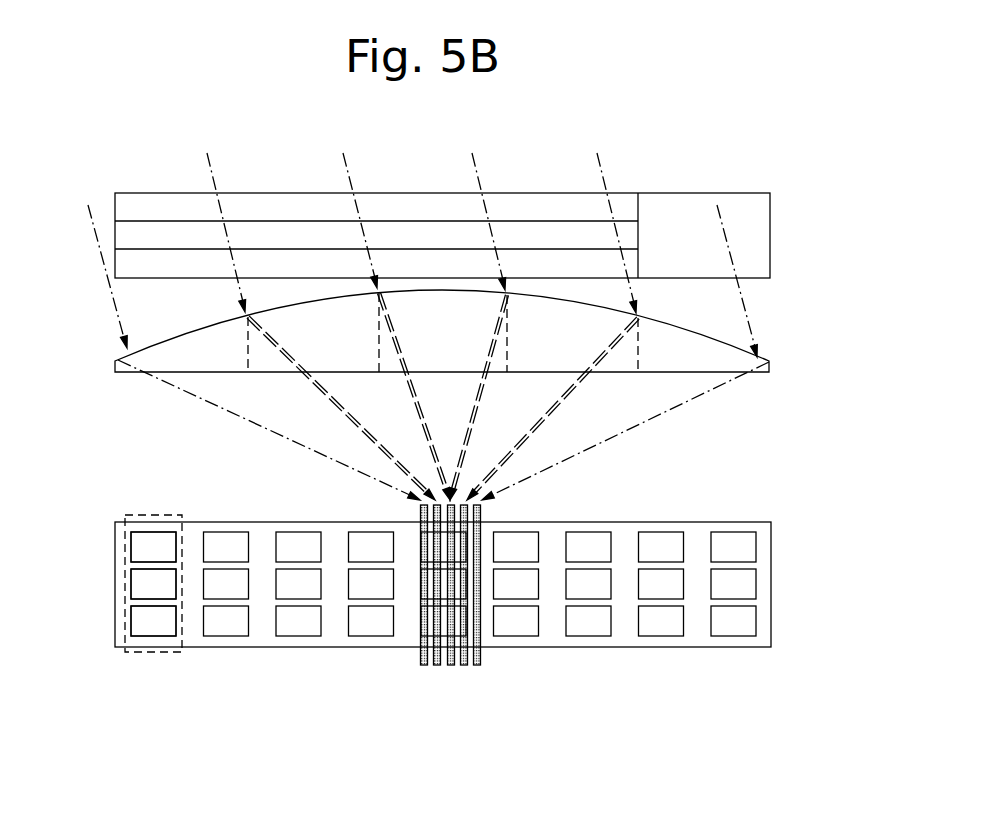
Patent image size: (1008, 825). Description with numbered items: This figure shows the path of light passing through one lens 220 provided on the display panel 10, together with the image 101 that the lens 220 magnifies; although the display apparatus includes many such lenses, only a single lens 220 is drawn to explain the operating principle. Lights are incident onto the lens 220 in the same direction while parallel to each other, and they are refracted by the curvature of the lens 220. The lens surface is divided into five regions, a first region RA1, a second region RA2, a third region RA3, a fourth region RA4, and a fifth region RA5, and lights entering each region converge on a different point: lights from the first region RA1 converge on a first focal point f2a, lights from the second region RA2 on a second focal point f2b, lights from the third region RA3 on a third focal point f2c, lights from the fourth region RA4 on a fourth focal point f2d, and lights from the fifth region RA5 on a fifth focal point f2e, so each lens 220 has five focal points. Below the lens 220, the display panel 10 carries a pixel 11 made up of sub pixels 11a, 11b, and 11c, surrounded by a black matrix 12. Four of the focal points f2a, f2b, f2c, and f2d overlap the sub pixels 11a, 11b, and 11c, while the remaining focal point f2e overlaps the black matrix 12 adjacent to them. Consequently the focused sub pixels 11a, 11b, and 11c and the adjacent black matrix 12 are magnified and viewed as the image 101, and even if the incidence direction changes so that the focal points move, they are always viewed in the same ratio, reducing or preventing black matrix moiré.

The image 101 is at (770, 238).
The lens 220 is at (780, 367).
The display panel 10 is at (450, 551).
The pixel 11 is at (163, 514).
The black matrix 12 is at (196, 528).
The sub pixel 11a is at (136, 546).
The sub pixel 11b is at (136, 583).
The sub pixel 11c is at (136, 620).
The first region RA1 is at (181, 373).
The second region RA2 is at (365, 373).
The third region RA3 is at (436, 373).
The fourth region RA4 is at (608, 373).
The fifth region RA5 is at (705, 373).
The first focal point f2a is at (424, 666).
The second focal point f2b is at (437, 666).
The third focal point f2c is at (451, 666).
The fourth focal point f2d is at (464, 666).
The fifth focal point f2e is at (477, 666).